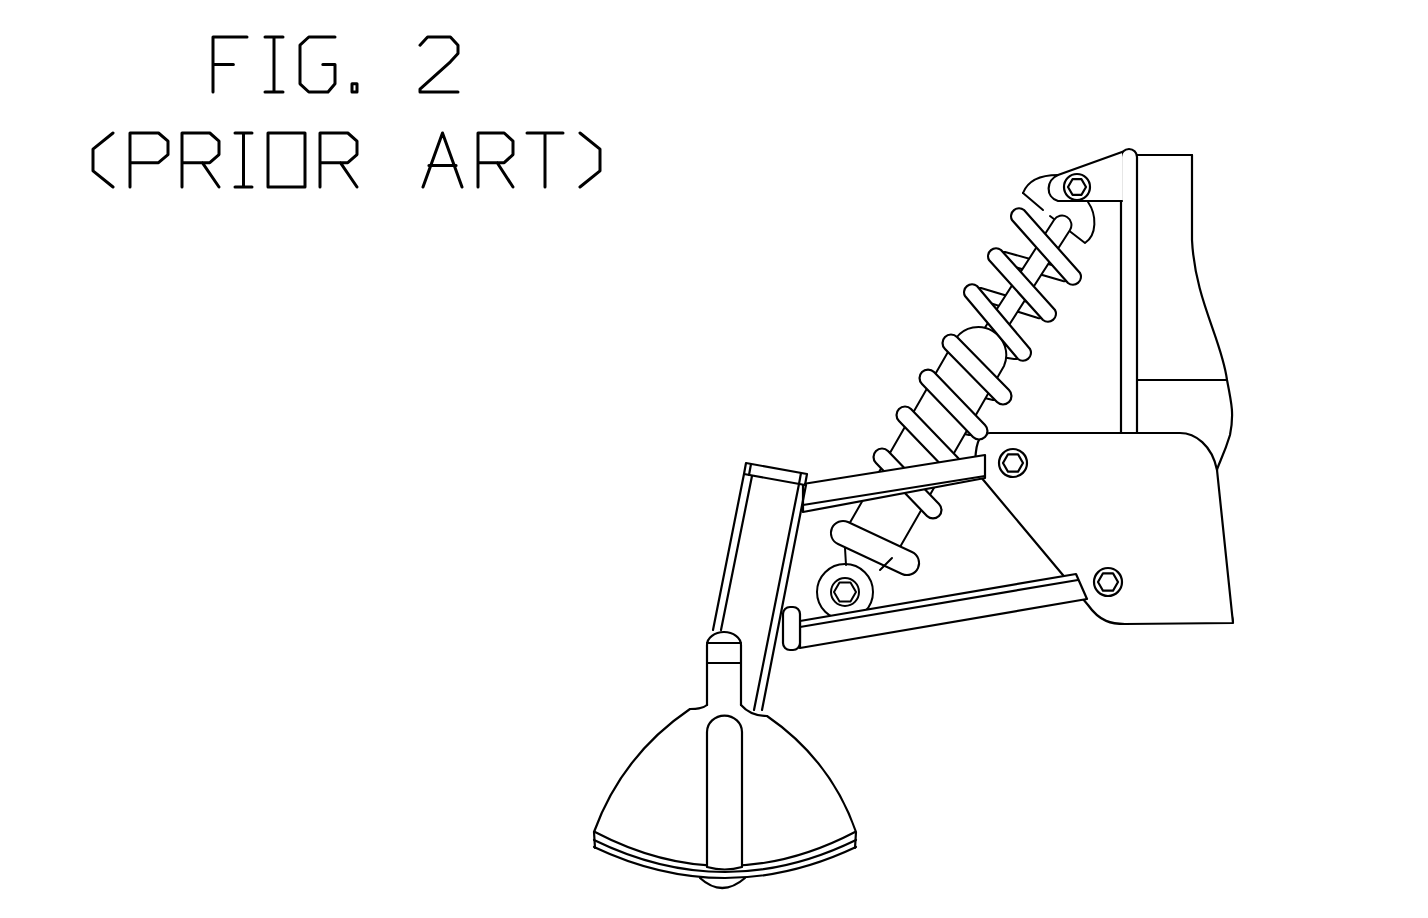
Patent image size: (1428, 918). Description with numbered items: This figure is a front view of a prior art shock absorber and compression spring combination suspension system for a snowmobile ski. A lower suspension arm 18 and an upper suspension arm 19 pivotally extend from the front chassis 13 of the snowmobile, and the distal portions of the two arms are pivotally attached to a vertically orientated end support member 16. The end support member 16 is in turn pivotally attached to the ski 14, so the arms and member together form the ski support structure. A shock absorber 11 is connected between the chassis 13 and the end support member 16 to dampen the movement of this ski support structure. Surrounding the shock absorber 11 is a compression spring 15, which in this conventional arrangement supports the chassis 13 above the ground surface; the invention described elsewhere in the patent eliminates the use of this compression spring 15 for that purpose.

The shock absorber 11 is at (945, 348).
The chassis 13 is at (1185, 550).
The ski 14 is at (640, 808).
The compression spring 15 is at (1000, 250).
The end support member 16 is at (755, 540).
The lower suspension arm 18 is at (955, 612).
The upper suspension arm 19 is at (835, 492).